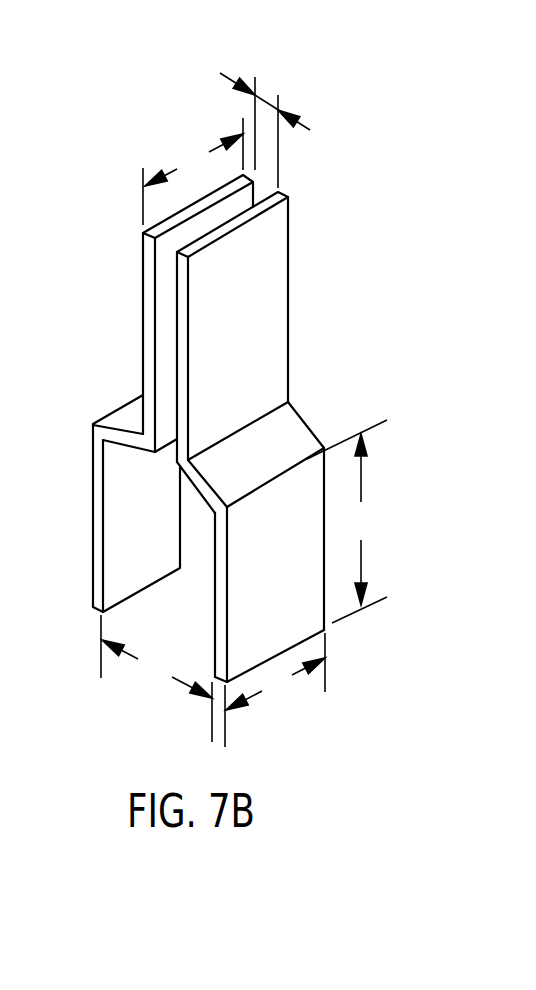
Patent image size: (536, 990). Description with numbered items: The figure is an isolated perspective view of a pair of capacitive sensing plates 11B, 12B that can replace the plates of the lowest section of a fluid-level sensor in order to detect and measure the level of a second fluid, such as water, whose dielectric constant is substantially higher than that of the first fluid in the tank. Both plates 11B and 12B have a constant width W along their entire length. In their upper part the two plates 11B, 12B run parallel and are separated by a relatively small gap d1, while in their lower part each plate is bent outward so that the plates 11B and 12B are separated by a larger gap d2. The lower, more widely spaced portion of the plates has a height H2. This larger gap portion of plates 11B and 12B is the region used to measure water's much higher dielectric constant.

The plate 11B is at (144, 393).
The plate 12B is at (282, 437).
The width W is at (234, 432).
The gap d1 is at (281, 120).
The height of lower plate portion H2 is at (347, 521).
The larger gap d2 is at (156, 678).